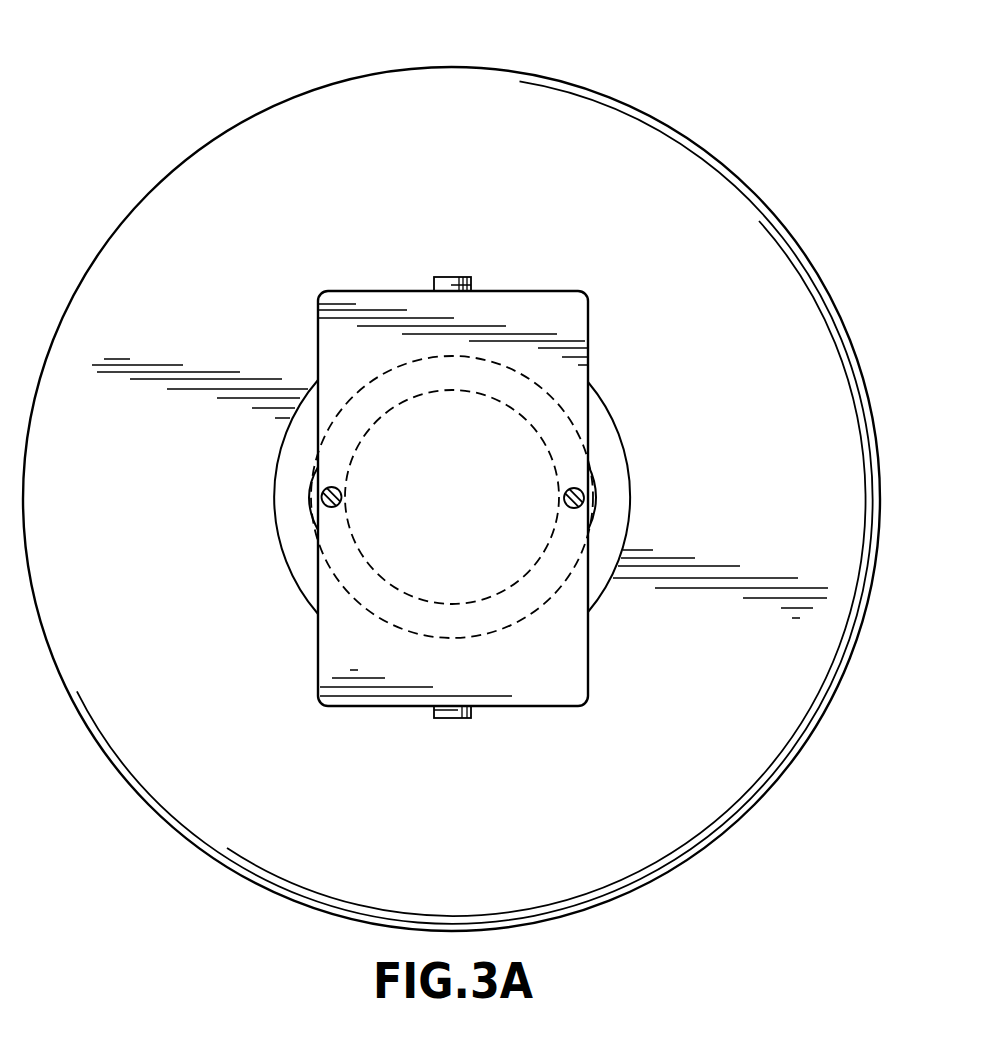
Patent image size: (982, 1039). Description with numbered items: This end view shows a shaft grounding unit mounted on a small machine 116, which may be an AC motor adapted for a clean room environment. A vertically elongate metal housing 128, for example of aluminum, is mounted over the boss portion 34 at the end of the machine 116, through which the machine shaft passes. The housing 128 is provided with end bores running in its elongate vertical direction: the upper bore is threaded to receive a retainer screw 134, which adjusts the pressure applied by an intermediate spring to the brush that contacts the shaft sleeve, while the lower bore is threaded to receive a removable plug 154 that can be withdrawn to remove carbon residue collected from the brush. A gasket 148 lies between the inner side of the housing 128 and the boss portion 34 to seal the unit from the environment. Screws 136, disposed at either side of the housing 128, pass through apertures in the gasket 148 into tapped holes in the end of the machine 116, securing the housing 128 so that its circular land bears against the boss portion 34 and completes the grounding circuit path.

The machine 116 is at (489, 67).
The housing 128 is at (616, 309).
The retainer screw 134 is at (452, 277).
The plug 154 is at (453, 720).
The gasket 148 is at (527, 620).
The screws 136 is at (325, 488).
The boss portion 34 is at (617, 472).